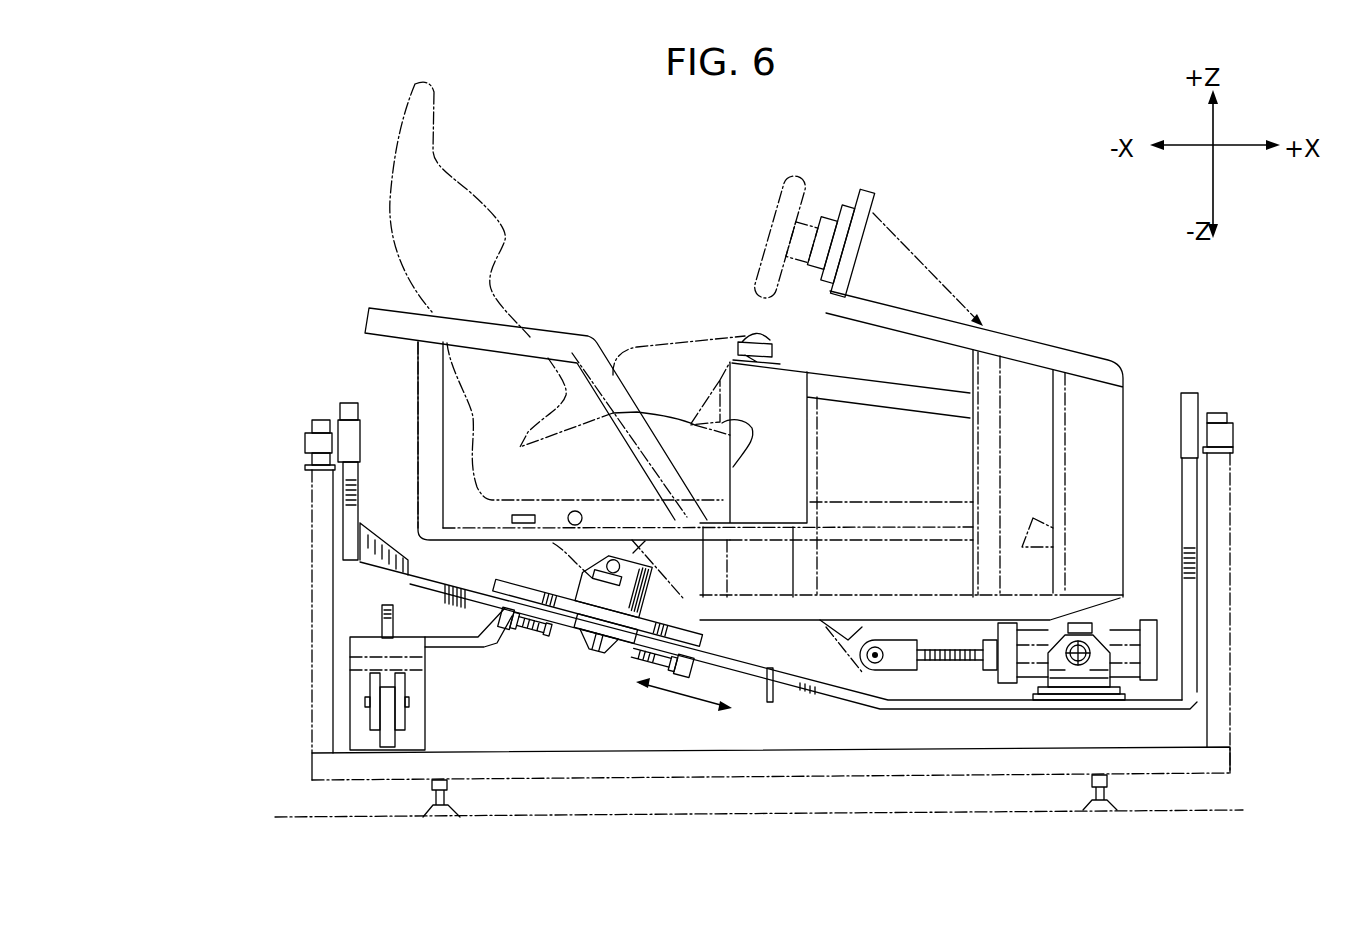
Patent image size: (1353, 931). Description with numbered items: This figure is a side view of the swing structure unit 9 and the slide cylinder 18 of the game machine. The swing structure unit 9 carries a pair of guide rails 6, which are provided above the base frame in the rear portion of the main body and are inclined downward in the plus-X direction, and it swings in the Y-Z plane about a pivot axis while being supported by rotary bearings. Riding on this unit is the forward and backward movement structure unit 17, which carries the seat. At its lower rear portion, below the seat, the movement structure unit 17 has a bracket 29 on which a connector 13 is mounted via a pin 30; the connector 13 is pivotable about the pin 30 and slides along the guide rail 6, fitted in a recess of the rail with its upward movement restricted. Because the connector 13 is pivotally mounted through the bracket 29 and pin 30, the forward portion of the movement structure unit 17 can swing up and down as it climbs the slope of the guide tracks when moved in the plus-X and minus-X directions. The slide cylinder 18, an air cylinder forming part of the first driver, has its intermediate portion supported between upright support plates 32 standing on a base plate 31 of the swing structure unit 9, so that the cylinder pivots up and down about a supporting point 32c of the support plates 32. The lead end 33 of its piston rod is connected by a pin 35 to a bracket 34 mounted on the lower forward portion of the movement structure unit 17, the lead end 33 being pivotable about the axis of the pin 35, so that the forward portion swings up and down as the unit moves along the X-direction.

The forward and backward movement structure unit 17 is at (645, 326).
The pin 30 is at (612, 565).
The bracket 29 is at (557, 555).
The connector 13 is at (586, 602).
The guide rail 6 is at (628, 636).
The swing structure unit 9 is at (811, 696).
The bracket 34 is at (832, 638).
The pin 35 is at (860, 660).
The lead end 33 is at (900, 657).
The base plate 31 is at (1060, 703).
The support plate 32 is at (1100, 663).
The supporting point 32c is at (1083, 667).
The slide cylinder 18 is at (1147, 628).